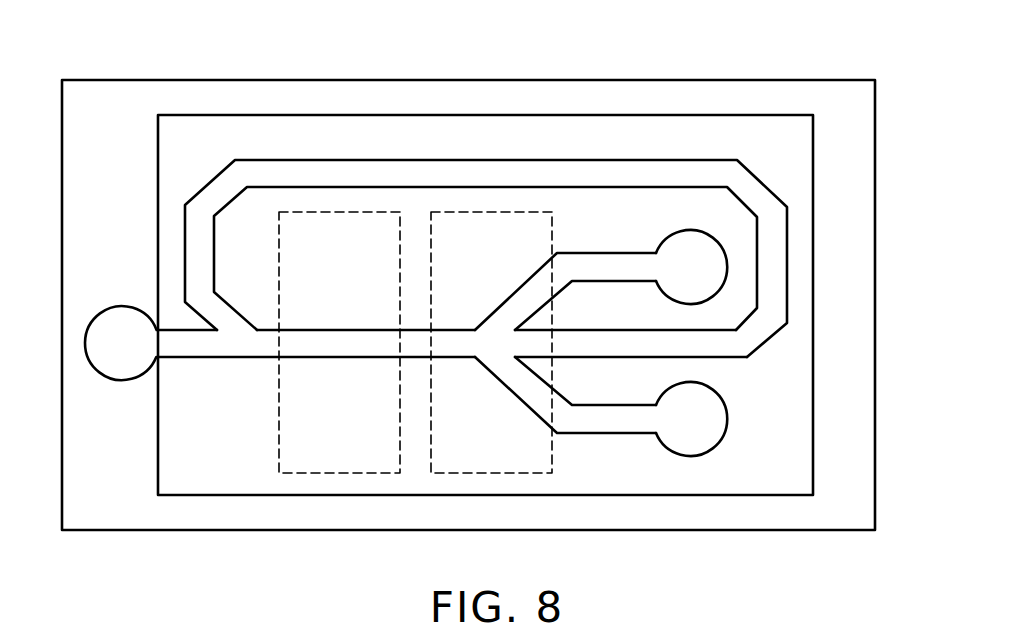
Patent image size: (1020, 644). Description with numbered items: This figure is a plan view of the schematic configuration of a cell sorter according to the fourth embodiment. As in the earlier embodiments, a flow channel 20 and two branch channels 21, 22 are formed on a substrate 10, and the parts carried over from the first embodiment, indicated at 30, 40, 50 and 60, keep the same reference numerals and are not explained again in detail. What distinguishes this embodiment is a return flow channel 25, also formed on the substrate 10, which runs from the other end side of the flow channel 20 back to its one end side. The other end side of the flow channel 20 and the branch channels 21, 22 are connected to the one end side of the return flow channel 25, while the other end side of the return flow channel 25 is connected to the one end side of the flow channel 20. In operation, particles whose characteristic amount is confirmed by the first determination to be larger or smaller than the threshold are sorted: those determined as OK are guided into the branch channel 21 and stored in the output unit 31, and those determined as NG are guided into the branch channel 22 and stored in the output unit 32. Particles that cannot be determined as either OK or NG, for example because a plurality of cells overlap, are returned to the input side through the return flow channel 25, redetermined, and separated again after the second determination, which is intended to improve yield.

The substrate 10 is at (875, 220).
The flow channel 20 is at (258, 358).
The branch channel 21 is at (600, 253).
The branch channel 22 is at (600, 434).
The return flow channel 25 is at (755, 177).
The inlet 30 is at (110, 307).
The output unit 31 is at (690, 231).
The output unit 32 is at (716, 447).
The substrate 40 is at (737, 115).
The first detection region 50 is at (365, 474).
The second detection region 60 is at (518, 474).